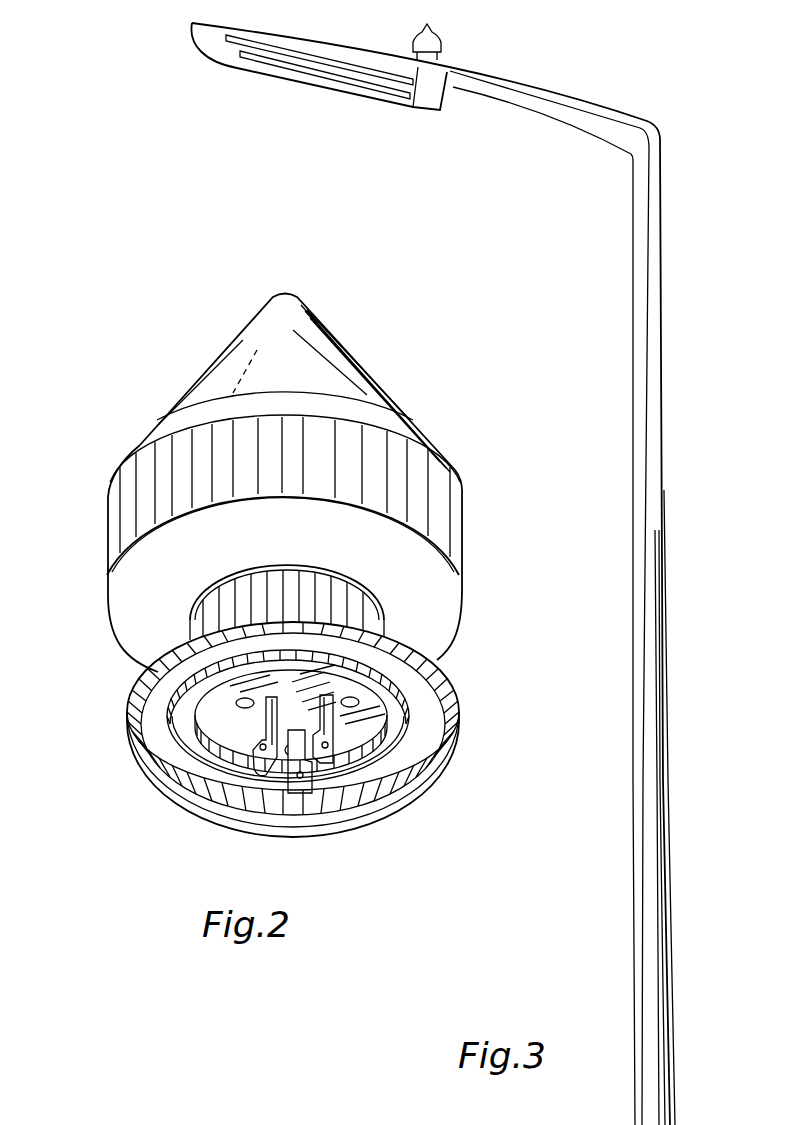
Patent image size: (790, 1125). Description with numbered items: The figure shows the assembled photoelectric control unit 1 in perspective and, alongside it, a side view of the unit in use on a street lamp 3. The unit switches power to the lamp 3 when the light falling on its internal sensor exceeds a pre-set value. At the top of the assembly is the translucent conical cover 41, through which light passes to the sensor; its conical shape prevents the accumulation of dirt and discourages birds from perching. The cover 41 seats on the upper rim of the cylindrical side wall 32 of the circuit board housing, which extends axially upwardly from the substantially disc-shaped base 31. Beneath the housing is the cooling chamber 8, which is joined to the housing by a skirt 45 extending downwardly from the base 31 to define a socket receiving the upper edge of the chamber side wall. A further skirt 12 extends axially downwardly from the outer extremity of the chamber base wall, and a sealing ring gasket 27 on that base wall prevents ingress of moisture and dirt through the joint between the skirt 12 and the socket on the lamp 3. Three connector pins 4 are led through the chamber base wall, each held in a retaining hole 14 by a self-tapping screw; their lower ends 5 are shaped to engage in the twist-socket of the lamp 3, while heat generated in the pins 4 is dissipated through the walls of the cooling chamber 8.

In FIG. 3, the photoelectric control unit 1 is at (463, 45).
In FIG. 2, the photoelectric control unit 1 is at (120, 833).
In FIG. 3, the street lamp 3 is at (416, 97).
In FIG. 2, the translucent conical cover 41 is at (337, 362).
In FIG. 2, the cylindrical side wall 32 is at (440, 510).
In FIG. 2, the disc-shaped base 31 is at (448, 607).
In FIG. 2, the skirt 45 is at (203, 591).
In FIG. 2, the cooling chamber 8 is at (190, 607).
In FIG. 2, the skirt 12 is at (413, 787).
In FIG. 2, the sealing ring gasket 27 is at (393, 750).
In FIG. 2, the connector pins 4 is at (333, 728).
In FIG. 2, the lower ends 5 is at (260, 757).
In FIG. 2, the retaining hole 14 is at (244, 708).